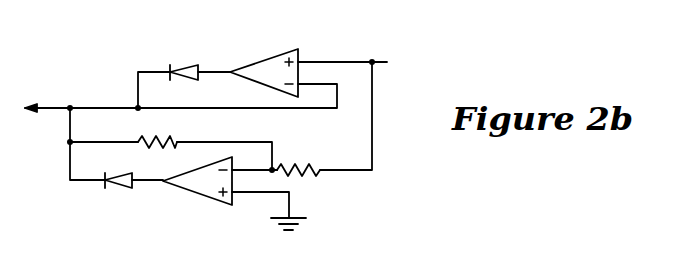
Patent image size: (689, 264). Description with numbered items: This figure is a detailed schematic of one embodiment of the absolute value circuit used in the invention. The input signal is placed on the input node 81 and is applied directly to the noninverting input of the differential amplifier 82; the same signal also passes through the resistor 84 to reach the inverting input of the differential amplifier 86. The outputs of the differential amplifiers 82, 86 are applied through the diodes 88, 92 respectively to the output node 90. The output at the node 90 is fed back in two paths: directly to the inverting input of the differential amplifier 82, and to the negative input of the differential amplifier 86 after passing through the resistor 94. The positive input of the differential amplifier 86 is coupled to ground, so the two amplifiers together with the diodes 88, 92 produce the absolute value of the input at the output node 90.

The input node 81 is at (332, 62).
The differential amplifier 82 is at (278, 53).
The resistor 84 is at (299, 164).
The differential amplifier 86 is at (186, 193).
The diode 88 is at (184, 65).
The output node 90 is at (60, 108).
The diode 92 is at (114, 186).
The resistor 94 is at (161, 129).